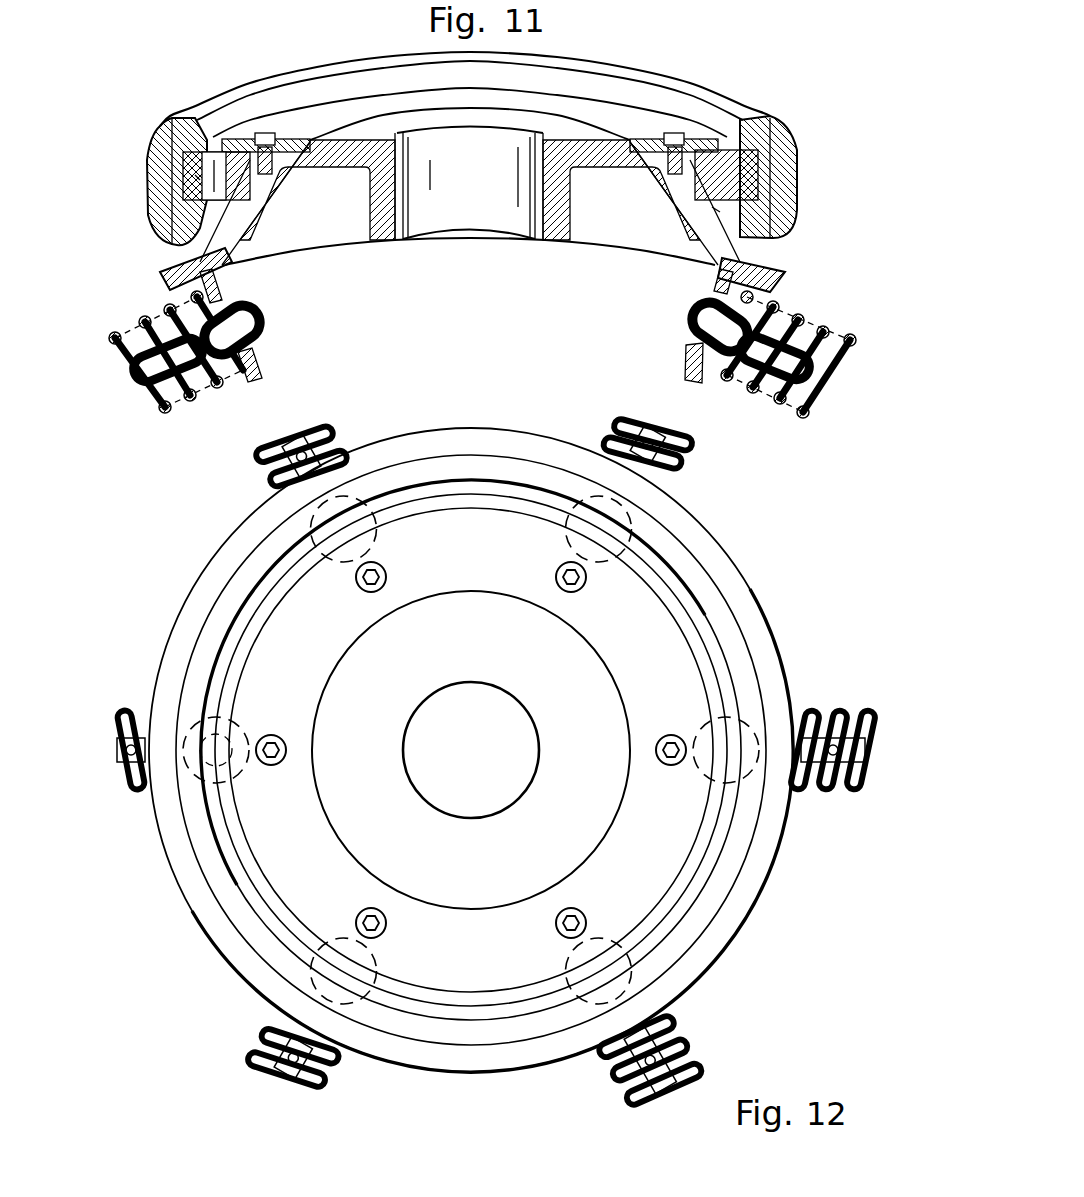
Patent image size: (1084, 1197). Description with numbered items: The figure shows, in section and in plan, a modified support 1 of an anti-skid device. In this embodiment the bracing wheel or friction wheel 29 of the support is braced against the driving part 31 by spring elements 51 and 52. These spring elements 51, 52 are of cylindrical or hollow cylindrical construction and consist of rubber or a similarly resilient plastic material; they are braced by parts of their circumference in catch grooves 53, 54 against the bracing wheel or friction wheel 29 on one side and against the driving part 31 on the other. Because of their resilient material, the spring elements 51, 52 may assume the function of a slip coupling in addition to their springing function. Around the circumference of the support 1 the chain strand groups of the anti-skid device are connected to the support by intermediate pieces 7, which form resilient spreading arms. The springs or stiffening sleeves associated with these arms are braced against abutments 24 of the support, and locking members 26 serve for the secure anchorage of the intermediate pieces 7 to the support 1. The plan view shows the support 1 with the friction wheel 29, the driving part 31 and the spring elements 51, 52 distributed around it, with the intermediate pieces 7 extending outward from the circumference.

In FIG. 11, the support 1 is at (481, 147).
In FIG. 11, the intermediate pieces 7 is at (206, 389).
In FIG. 11, the abutments 24 is at (245, 372).
In FIG. 11, the locking members 26 is at (258, 318).
In FIG. 11, the bracing wheel or friction wheel 29 is at (757, 143).
In FIG. 12, the bracing wheel or friction wheel 29 is at (740, 898).
In FIG. 11, the driving part 31 is at (780, 272).
In FIG. 12, the driving part 31 is at (522, 965).
In FIG. 11, the spring element 51 is at (733, 135).
In FIG. 12, the spring element 51 is at (360, 518).
In FIG. 11, the spring element 52 is at (215, 163).
In FIG. 12, the spring element 52 is at (224, 748).
In FIG. 11, the catch groove 53 is at (193, 187).
In FIG. 11, the catch groove 54 is at (697, 182).